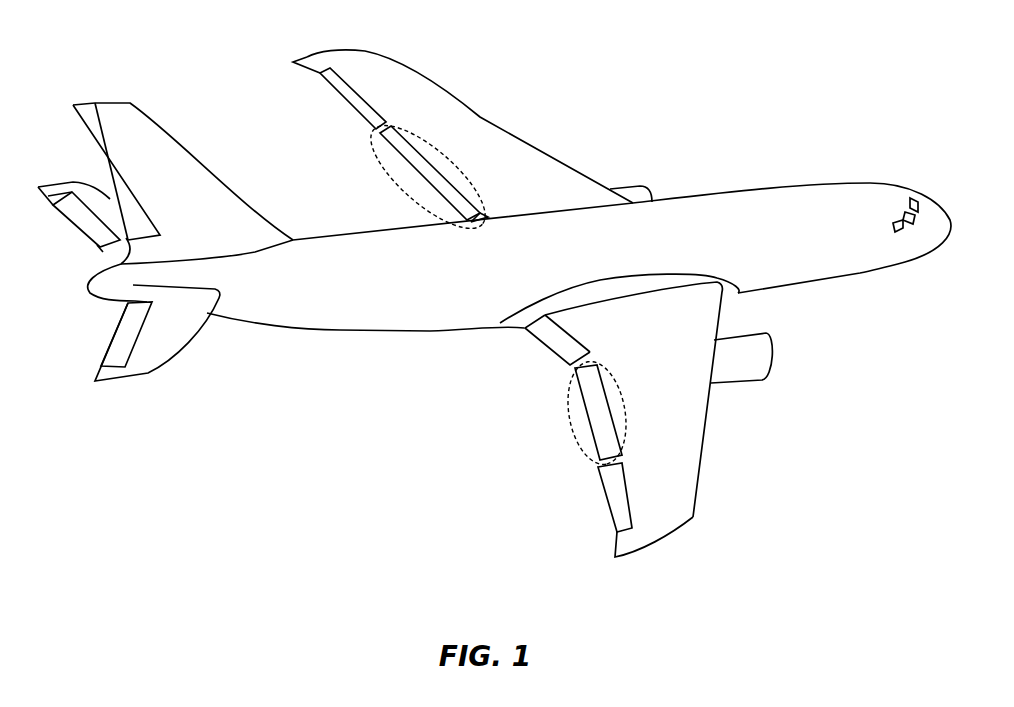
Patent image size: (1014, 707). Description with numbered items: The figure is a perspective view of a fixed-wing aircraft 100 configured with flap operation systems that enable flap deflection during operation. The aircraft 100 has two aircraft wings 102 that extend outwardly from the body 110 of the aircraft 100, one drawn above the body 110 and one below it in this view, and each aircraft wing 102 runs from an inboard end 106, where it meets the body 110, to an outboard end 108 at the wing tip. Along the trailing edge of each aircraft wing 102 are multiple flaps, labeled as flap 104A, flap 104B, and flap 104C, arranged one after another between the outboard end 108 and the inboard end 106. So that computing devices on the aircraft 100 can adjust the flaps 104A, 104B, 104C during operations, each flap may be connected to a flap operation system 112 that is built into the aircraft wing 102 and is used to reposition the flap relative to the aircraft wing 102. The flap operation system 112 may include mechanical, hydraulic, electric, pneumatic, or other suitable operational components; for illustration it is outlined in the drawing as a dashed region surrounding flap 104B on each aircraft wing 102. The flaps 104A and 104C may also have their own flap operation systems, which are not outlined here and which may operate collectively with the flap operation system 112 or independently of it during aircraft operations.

The aircraft 100 is at (714, 94).
The aircraft wing 102 is at (400, 72).
The flap 104A is at (343, 103).
The flap 104B is at (407, 161).
The flap 104C is at (551, 348).
The inboard end 106 is at (482, 216).
The outboard end 108 is at (297, 63).
The body 110 is at (763, 210).
The flap operation system 112 is at (377, 158).